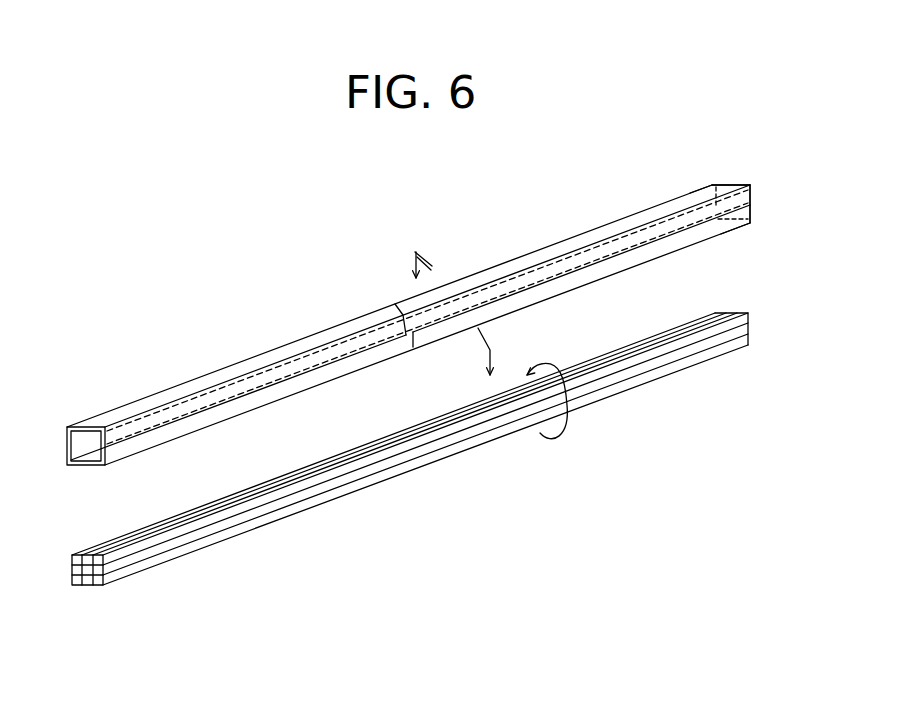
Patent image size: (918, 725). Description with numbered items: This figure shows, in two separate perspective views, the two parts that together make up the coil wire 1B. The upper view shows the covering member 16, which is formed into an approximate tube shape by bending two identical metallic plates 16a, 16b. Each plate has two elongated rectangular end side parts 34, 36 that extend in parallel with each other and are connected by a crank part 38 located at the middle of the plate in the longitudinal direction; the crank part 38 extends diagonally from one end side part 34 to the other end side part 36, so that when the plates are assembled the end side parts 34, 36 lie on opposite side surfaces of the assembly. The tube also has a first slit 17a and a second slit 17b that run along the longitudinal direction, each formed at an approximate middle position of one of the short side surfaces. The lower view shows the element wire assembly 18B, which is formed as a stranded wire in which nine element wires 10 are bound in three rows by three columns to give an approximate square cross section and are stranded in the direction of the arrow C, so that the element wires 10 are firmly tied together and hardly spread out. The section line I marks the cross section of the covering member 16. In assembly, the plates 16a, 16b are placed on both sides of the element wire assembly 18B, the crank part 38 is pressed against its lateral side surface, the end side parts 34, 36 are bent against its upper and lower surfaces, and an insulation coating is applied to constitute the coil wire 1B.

The coil wire 1B is at (755, 168).
The covering member 16 is at (689, 182).
The metallic plate 16a is at (528, 250).
The metallic plate 16b is at (302, 334).
The first slit 17a is at (660, 238).
The second slit 17b is at (132, 430).
The end side part 34 is at (227, 372).
The end side part 36 is at (597, 240).
The crank part 38 is at (414, 346).
The element wire assembly 18B is at (431, 467).
The element wire 10 is at (96, 587).
The arrow C is at (556, 407).
The section line I- I is at (451, 316).